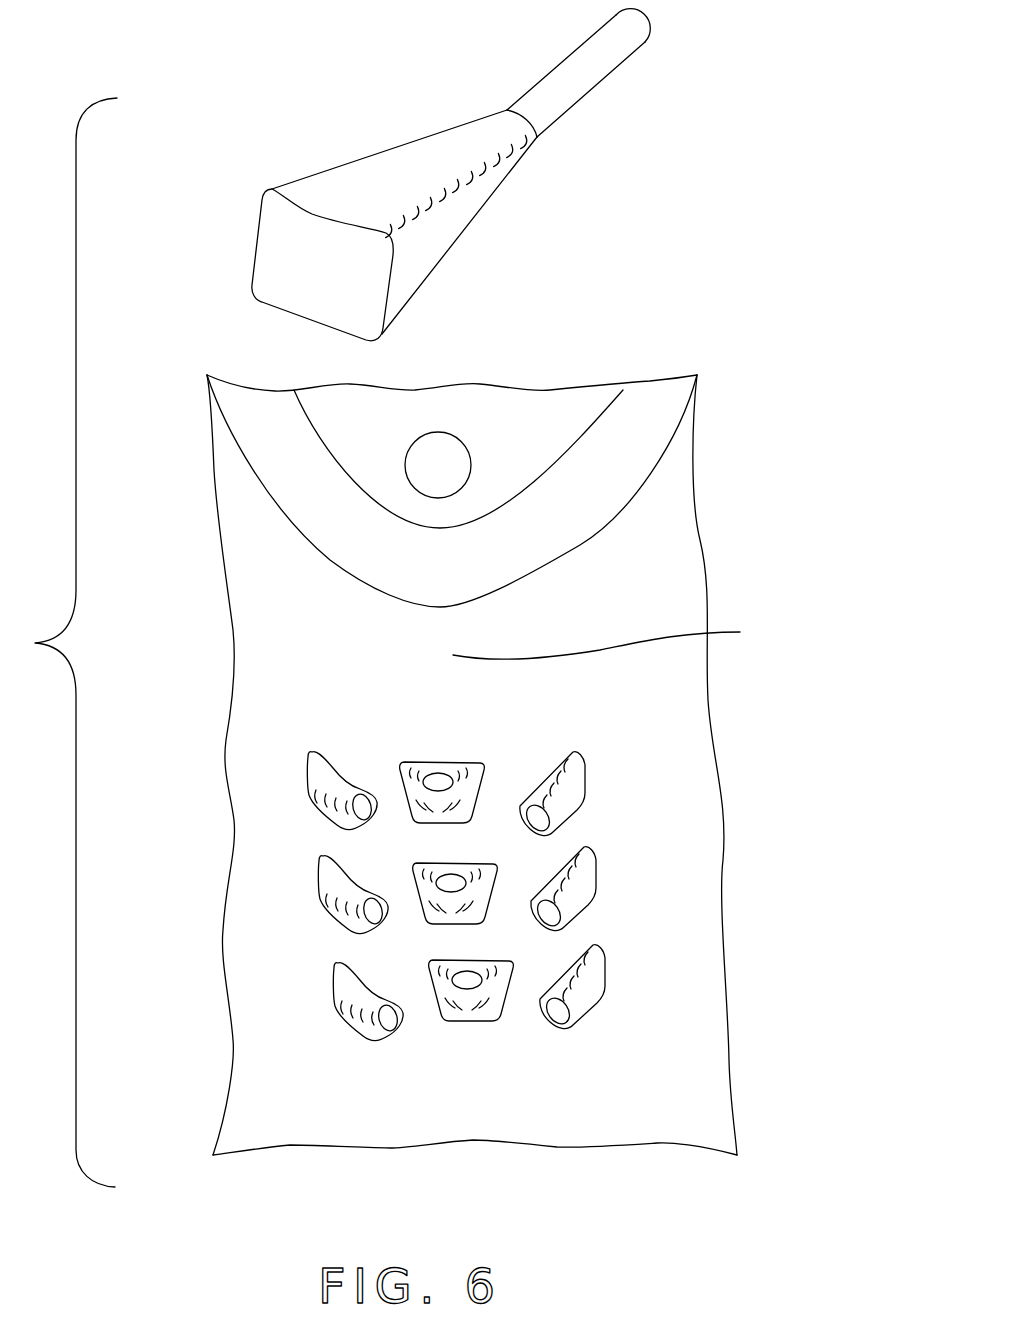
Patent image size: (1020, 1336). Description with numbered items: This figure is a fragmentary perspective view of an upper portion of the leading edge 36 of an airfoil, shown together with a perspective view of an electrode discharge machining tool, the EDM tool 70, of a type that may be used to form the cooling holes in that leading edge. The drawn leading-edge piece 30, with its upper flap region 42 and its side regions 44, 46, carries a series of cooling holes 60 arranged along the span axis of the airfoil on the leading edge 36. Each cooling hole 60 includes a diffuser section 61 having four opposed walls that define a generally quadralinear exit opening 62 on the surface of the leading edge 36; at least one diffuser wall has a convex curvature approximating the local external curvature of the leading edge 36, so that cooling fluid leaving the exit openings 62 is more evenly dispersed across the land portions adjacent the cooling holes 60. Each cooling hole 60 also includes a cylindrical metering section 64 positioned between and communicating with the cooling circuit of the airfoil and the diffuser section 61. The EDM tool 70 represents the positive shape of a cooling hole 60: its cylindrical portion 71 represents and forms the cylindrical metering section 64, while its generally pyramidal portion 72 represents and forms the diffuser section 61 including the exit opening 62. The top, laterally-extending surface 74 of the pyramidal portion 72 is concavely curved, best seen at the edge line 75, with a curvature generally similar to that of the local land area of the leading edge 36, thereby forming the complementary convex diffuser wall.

The pouch 30 is at (754, 410).
The leading edge 36 is at (700, 632).
The flap 42 is at (637, 407).
The right side edge 44 is at (678, 540).
The left side edge 46 is at (237, 547).
The cooling holes 60 is at (614, 793).
The diffuser section 61 is at (587, 770).
The exit opening 62 is at (585, 760).
The cylindrical metering section 64 is at (587, 793).
The EDM tool 70 is at (422, 48).
The cylindrical portion 71 is at (612, 62).
The pyramidal portion 72 is at (362, 158).
The top laterally-extending surface 74 is at (400, 190).
The edge line 75 is at (308, 206).